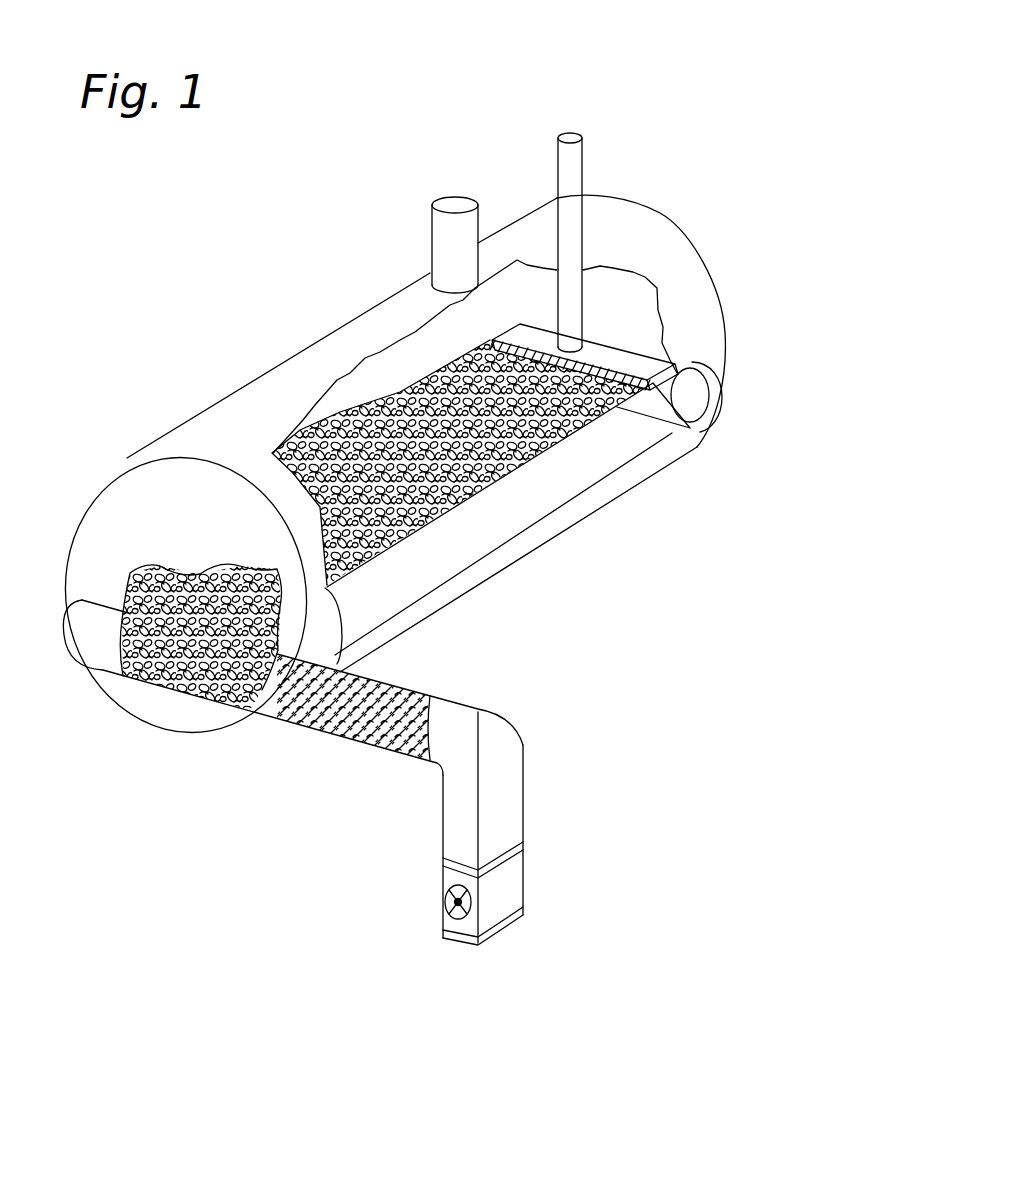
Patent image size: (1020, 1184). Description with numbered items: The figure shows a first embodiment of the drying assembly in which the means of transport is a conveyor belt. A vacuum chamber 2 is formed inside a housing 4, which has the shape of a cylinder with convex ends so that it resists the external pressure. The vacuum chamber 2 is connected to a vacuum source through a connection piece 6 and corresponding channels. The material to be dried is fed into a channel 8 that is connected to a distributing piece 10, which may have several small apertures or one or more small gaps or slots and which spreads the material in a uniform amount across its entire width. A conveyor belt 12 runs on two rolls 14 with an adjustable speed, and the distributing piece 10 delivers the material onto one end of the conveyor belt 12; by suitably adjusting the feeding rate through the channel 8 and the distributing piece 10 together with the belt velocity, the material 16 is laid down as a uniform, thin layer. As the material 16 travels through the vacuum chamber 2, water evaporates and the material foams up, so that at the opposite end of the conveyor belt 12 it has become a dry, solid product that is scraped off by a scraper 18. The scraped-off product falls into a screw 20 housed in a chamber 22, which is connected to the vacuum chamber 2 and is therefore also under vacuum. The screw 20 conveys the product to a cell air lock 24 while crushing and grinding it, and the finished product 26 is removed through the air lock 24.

The vacuum chamber 2 is at (433, 350).
The housing 4 is at (716, 291).
The connection piece 6 is at (453, 180).
The channel 8 is at (567, 115).
The distributing piece 10 is at (608, 346).
The conveyor belt 12 is at (607, 480).
The rolls 14 is at (698, 398).
The material 16 is at (457, 513).
The scraper 18 is at (252, 713).
The screw 20 is at (152, 660).
The chamber 22 is at (357, 742).
The cell air lock 24 is at (520, 880).
The finished product 26 is at (485, 960).